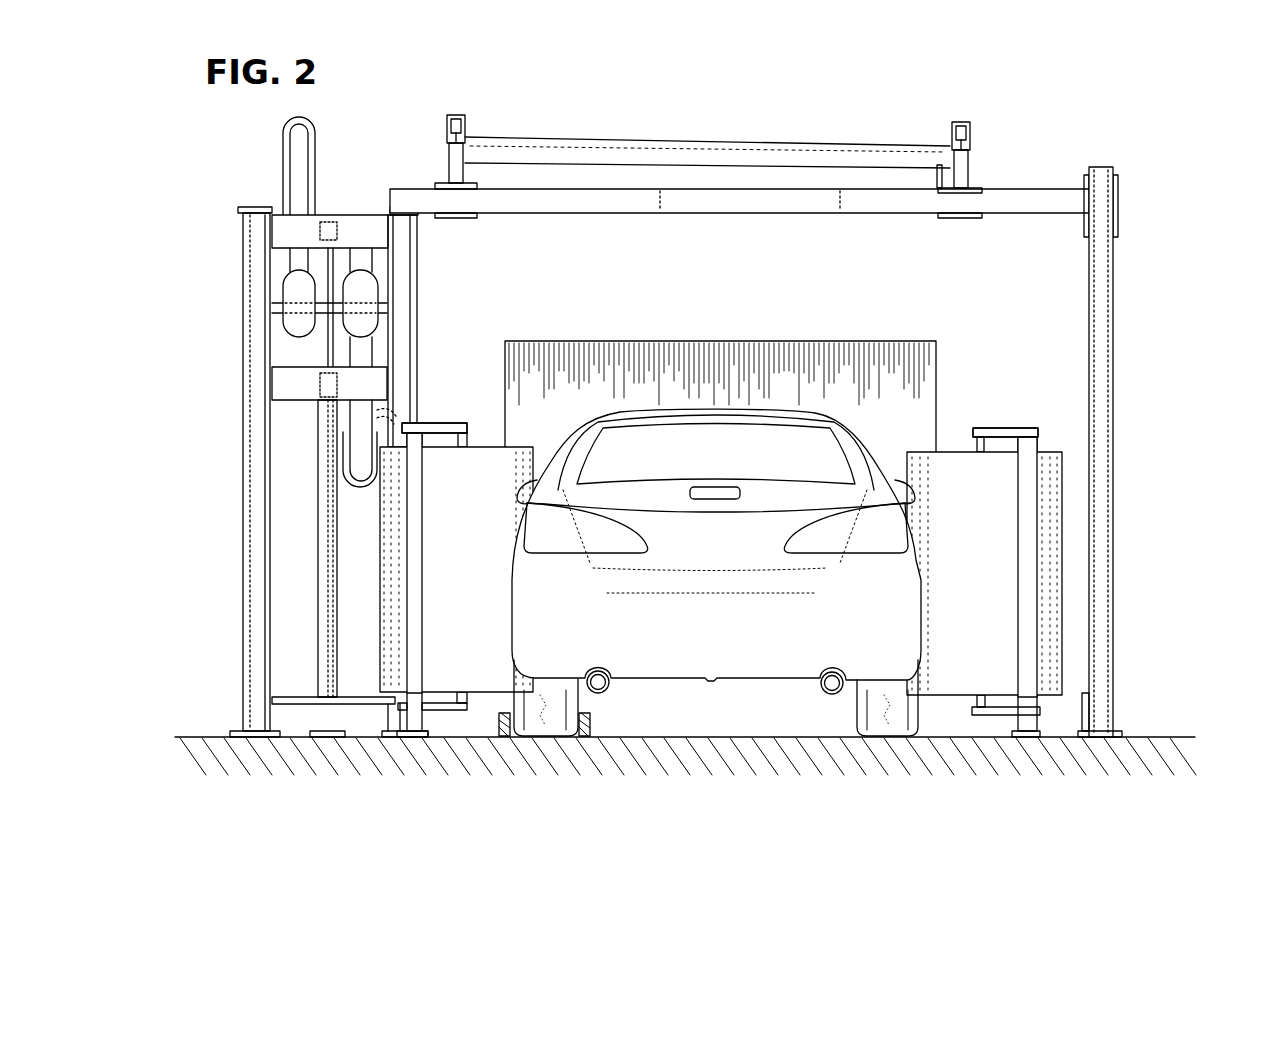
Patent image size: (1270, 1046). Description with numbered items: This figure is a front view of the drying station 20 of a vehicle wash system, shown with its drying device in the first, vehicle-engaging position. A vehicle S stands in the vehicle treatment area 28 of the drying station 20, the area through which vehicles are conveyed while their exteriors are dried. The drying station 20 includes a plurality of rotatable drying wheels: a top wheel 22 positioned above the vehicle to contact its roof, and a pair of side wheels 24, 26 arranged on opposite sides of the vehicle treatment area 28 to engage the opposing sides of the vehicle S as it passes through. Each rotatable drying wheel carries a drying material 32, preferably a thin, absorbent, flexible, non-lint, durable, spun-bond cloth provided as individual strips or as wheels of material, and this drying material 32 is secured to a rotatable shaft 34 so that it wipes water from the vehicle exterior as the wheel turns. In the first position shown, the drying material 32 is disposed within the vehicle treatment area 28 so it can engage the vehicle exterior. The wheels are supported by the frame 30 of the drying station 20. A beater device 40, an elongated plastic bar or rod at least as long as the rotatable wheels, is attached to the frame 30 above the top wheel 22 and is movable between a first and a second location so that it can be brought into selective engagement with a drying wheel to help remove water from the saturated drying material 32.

The drying station 20 is at (724, 441).
The top wheel 22 is at (900, 470).
The side wheel 24 is at (1047, 450).
The side wheel 26 is at (496, 446).
The vehicle treatment area 28 is at (646, 710).
The frame 30 is at (1017, 190).
The drying material 32 is at (762, 338).
The rotatable shaft 34 is at (470, 437).
The beater device 40 is at (918, 140).
The vehicle S is at (794, 678).